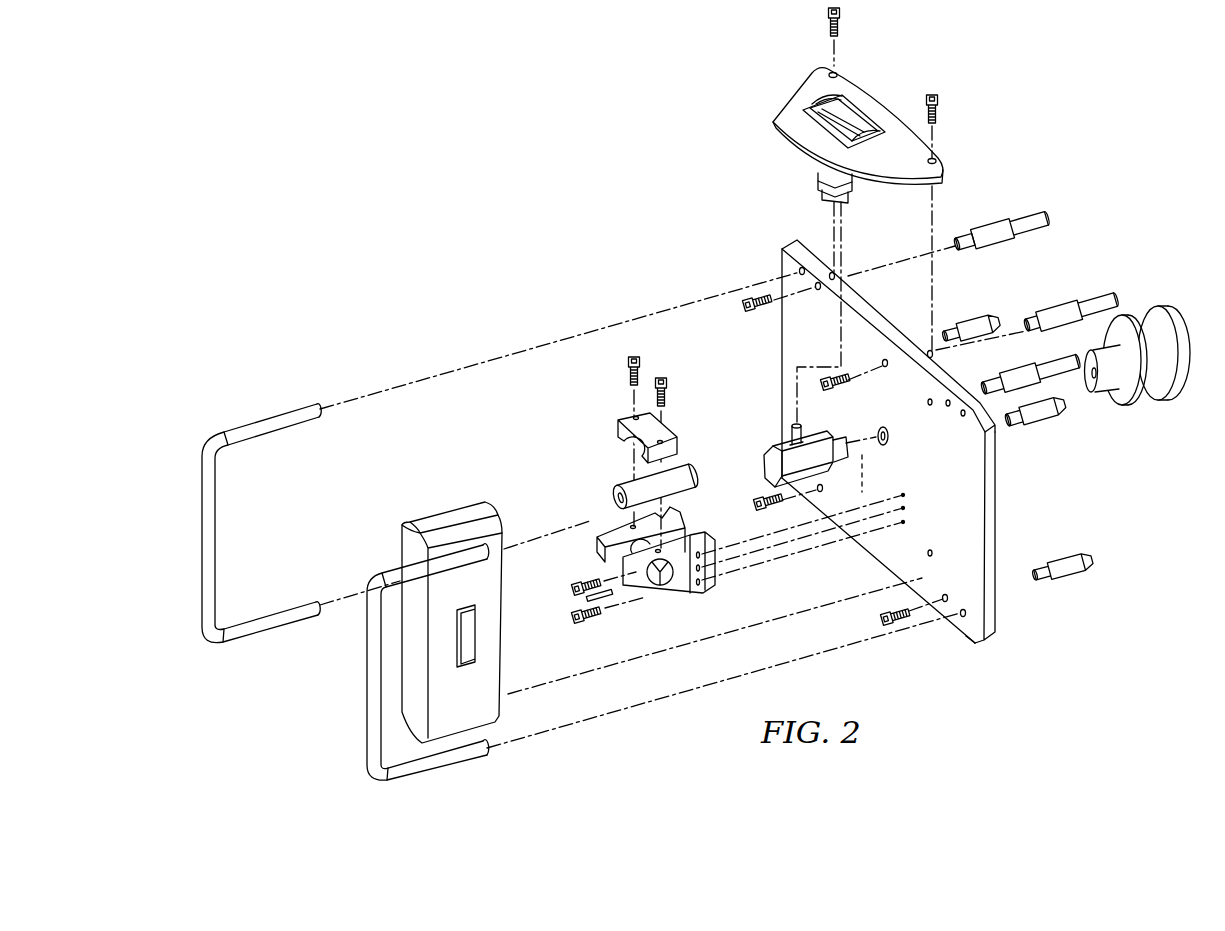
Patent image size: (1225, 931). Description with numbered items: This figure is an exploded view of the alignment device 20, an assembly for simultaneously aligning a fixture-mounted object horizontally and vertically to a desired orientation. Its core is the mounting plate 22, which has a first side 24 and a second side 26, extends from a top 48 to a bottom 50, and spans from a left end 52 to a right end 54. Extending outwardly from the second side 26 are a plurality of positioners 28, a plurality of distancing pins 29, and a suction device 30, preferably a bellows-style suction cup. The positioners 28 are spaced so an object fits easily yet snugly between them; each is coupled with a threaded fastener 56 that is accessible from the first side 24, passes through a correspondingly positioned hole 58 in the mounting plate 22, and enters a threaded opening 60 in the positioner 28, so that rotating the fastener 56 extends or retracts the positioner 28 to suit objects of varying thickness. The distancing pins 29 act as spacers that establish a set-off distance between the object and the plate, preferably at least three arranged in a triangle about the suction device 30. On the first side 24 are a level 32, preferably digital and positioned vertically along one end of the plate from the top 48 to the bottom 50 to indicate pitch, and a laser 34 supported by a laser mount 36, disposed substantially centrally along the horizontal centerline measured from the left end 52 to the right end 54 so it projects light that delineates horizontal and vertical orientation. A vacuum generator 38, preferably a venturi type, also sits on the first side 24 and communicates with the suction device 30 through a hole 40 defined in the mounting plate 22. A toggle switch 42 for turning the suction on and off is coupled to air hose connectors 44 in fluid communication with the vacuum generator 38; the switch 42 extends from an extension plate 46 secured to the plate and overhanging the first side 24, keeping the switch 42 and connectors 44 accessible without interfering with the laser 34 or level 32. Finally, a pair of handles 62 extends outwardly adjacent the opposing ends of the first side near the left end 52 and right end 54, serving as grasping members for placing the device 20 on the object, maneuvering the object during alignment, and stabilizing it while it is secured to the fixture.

The alignment device 20 is at (521, 172).
The mounting plate 22 is at (889, 445).
The first side 24 is at (934, 503).
The second side 26 is at (998, 500).
The positioners 28 is at (1028, 220).
The distancing pins 29 is at (973, 322).
The suction device 30 is at (1163, 306).
The level 32 is at (440, 509).
The laser 34 is at (612, 497).
The laser mount 36 is at (597, 552).
The vacuum generator 38 is at (780, 445).
The hole 40 is at (884, 440).
The toggle switch 42 is at (818, 99).
The air hose connectors 44 is at (842, 202).
The extension plate 46 is at (807, 140).
The top 48 is at (893, 343).
The bottom 50 is at (883, 556).
The left end 52 is at (782, 358).
The right end 54 is at (975, 593).
The threaded fastener 56 is at (762, 296).
The hole 58 is at (817, 291).
The threaded opening 60 is at (960, 238).
The handles 62 is at (267, 416).